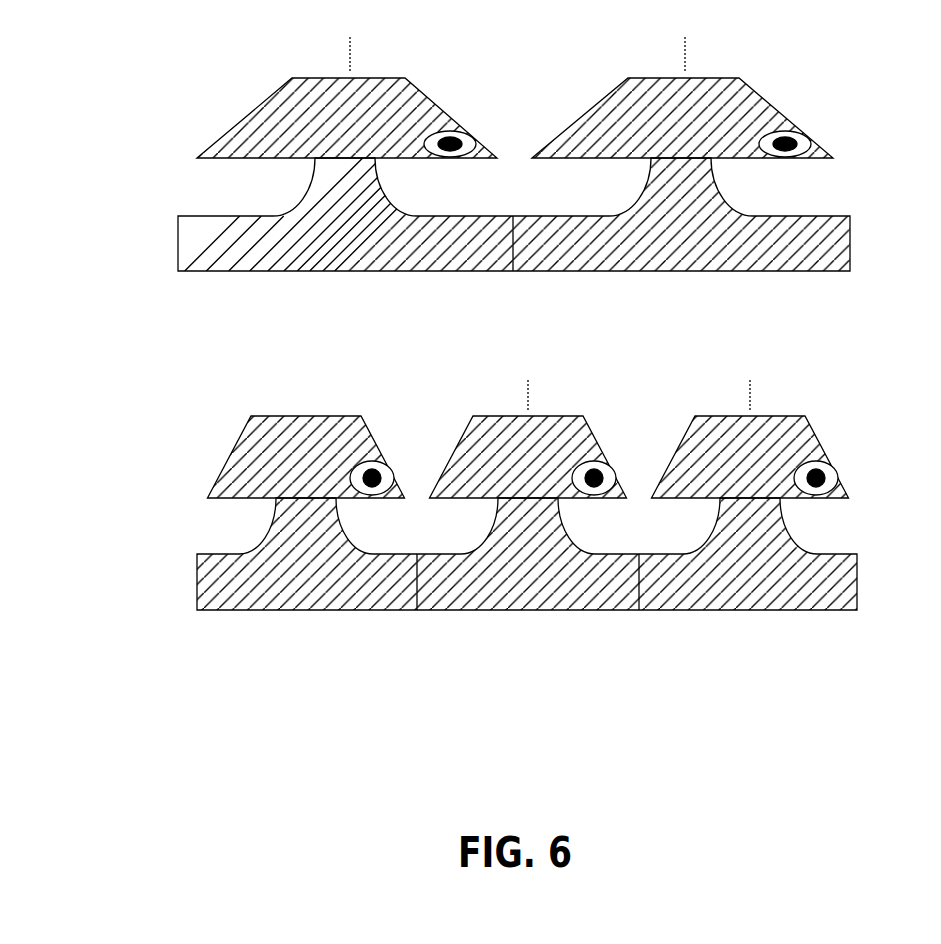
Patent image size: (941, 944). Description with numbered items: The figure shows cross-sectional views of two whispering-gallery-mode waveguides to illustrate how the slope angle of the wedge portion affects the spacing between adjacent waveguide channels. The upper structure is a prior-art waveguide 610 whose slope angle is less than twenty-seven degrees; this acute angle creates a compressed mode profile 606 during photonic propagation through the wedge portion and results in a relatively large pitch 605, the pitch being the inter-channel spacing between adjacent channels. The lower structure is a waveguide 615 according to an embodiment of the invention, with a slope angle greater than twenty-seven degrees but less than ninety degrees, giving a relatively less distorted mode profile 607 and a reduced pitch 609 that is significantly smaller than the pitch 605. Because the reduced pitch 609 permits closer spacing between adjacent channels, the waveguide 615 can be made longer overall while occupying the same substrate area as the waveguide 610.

The pitch 605 is at (683, 53).
The compressed mode profile 606 is at (456, 125).
The mode profile 607 is at (386, 453).
The reduced pitch 609 is at (530, 393).
The waveguide 610 is at (108, 130).
The waveguide 615 is at (114, 469).